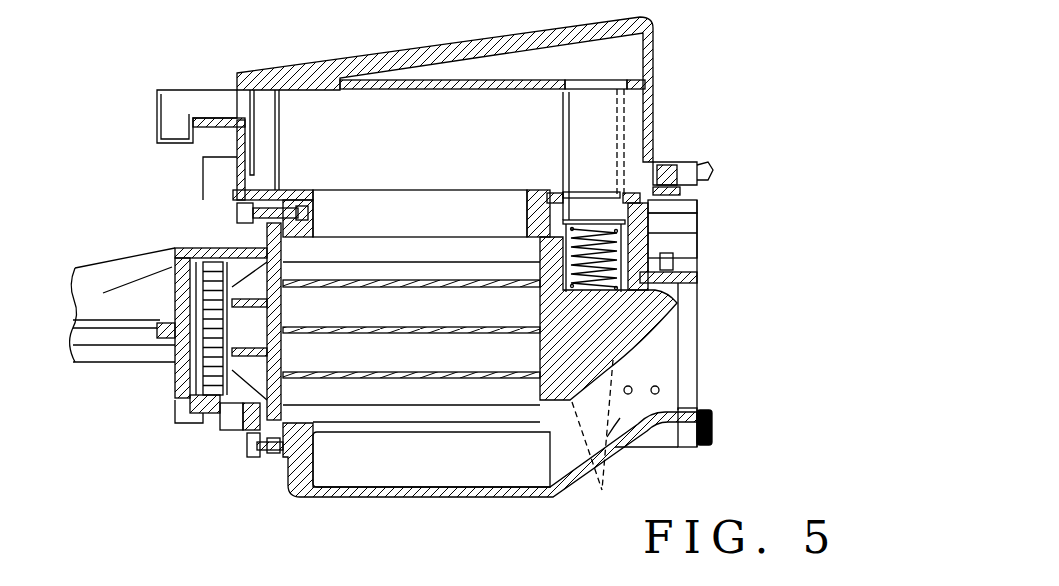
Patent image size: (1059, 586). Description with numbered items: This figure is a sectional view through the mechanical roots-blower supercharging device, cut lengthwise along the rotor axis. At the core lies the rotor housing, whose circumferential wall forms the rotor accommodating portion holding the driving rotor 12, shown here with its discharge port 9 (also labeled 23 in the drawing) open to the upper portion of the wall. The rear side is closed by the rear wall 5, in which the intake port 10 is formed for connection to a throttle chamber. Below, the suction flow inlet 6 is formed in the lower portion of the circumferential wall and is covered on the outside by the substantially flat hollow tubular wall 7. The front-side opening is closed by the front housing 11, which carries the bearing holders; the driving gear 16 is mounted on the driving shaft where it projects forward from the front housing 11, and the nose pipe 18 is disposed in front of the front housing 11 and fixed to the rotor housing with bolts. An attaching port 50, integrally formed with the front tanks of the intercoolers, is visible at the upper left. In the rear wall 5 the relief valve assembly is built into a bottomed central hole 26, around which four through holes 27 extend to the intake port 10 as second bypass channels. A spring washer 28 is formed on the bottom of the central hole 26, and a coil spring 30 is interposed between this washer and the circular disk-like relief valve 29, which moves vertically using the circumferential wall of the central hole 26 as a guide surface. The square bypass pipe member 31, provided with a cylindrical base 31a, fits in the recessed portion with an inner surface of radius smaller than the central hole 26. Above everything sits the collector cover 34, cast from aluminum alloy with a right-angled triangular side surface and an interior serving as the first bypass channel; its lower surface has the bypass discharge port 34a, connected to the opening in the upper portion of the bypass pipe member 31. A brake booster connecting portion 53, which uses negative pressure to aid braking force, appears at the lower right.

The rear wall 5 is at (700, 277).
The suction flow inlet 6 is at (393, 432).
The hollow tubular wall 7 is at (475, 495).
The discharge port 9 is at (426, 185).
The rotor magnet 23 is at (360, 198).
The intake port 10 is at (690, 385).
The front housing 11 is at (268, 458).
The driving rotor 12 is at (360, 395).
The driving gear 16 is at (173, 390).
The nose pipe 18 is at (112, 267).
The central hole 26 is at (645, 292).
The through holes 27 is at (593, 442).
The spring washer 28 is at (630, 315).
The relief valve 29 is at (650, 213).
The coil spring 30 is at (650, 242).
The bypass pipe member 31 is at (625, 118).
The cylindrical base 31a is at (633, 185).
The collector cover 34 is at (655, 20).
The bypass discharge port 34a is at (600, 82).
The attaching port 50 is at (191, 88).
The brake booster connecting portion 53 is at (680, 448).